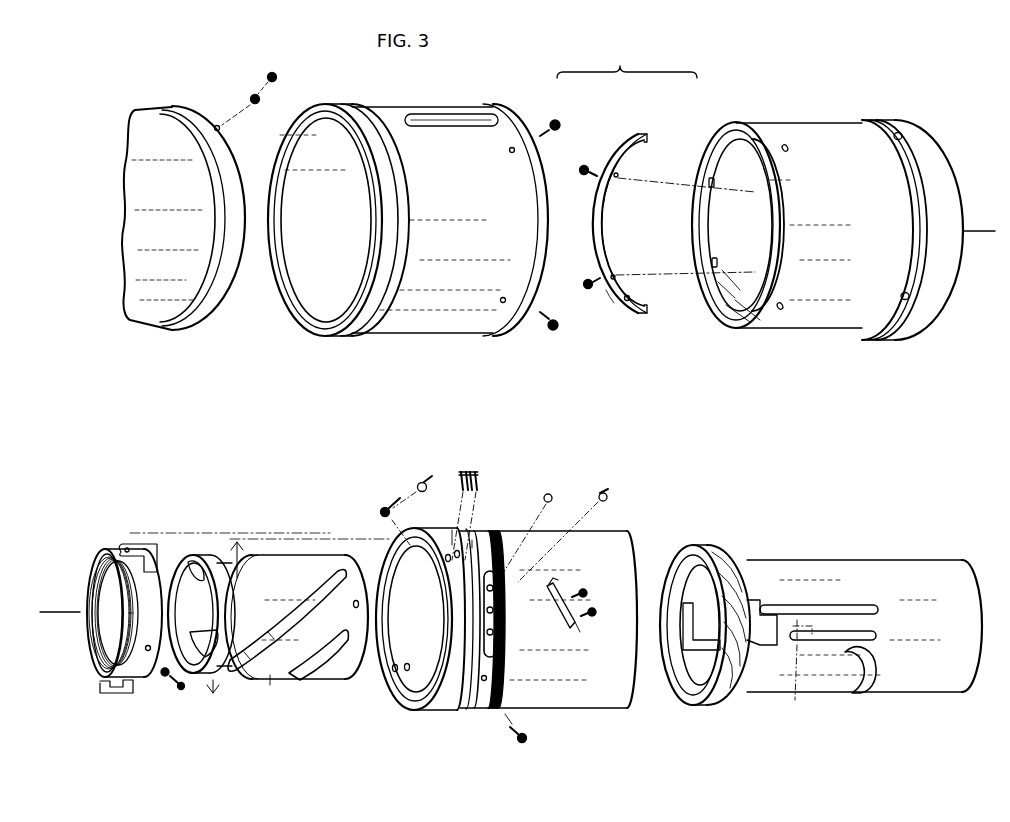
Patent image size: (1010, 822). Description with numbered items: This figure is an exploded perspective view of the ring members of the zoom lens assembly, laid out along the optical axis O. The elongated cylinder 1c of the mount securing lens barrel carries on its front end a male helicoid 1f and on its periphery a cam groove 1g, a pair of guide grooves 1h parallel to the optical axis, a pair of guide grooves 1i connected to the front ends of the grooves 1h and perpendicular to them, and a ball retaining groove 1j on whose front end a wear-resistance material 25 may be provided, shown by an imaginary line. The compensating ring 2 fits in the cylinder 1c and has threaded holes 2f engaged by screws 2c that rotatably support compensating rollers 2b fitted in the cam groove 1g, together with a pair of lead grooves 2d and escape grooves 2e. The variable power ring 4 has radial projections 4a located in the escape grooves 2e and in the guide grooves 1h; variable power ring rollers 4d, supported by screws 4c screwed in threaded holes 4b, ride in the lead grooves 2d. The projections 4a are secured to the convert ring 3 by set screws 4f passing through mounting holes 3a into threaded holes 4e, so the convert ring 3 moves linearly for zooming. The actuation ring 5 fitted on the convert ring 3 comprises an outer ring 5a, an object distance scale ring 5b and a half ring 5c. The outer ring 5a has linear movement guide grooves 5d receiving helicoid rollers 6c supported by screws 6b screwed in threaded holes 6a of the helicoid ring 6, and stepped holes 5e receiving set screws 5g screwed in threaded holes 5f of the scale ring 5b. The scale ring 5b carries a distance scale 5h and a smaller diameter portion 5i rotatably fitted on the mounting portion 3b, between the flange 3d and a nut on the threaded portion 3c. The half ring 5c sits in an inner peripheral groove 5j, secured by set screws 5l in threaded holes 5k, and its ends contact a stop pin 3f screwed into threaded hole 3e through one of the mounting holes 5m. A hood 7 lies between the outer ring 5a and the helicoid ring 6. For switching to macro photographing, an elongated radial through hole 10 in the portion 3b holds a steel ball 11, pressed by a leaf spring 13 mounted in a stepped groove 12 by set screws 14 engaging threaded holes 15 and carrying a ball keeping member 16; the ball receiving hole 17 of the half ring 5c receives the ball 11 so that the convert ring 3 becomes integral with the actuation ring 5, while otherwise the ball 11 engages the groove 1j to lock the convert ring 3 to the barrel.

The helicoid ring 6 is at (138, 320).
The threaded holes 6a is at (226, 128).
The screws 6b is at (278, 77).
The helicoid rollers 6c is at (262, 103).
The actuation ring 5 is at (614, 66).
The outer ring 5a is at (475, 104).
The object distance scale ring 5b is at (745, 122).
The half ring 5c is at (635, 132).
The linear movement guide grooves 5d is at (440, 117).
The stepped holes 5e is at (508, 151).
The threaded holes 5f is at (903, 133).
The set screws 5g is at (561, 122).
The distance scale 5h is at (946, 168).
The smaller diameter portion 5i is at (720, 292).
The inner peripheral groove 5j is at (738, 325).
The threaded holes 5k is at (700, 186).
The set screws 5l is at (579, 170).
The mounting holes 5m is at (788, 151).
The ball receiving hole 17 is at (610, 298).
The optical axis O is at (516, 422).
The variable power ring 4 is at (88, 563).
The radial projections 4a is at (150, 546).
The threaded holes 4b is at (147, 654).
The screws 4c is at (183, 690).
The variable power ring rollers 4d is at (165, 678).
The threaded holes 4e is at (126, 546).
The set screws 4f is at (466, 470).
The compensating ring 2 is at (257, 537).
The compensating rollers 2b is at (380, 508).
The screws 2c is at (421, 482).
The lead grooves 2d is at (195, 562).
The escape grooves 2e is at (280, 560).
The threaded holes 2f is at (354, 598).
The hood 7 is at (270, 685).
The convert ring 3 is at (608, 548).
The mounting holes 3a is at (447, 555).
The mounting portion 3b is at (455, 542).
The threaded portion 3c is at (480, 535).
The flange 3d is at (460, 712).
The threaded hole 3e is at (489, 678).
The stop pin 3f is at (530, 740).
The radial through hole 10 is at (499, 578).
The steel ball 11 is at (551, 494).
The stepped groove 12 is at (497, 630).
The leaf spring 13 is at (577, 625).
The set screws 14 is at (597, 607).
The threaded holes 15 is at (497, 613).
The ball keeping member 16 is at (604, 490).
The elongated cylinder 1c is at (815, 563).
The male helicoid 1f is at (722, 552).
The cam groove 1g is at (874, 690).
The guide grooves 1h is at (845, 604).
The guide grooves 1i is at (766, 603).
The ball retaining groove 1j is at (878, 636).
The wear-resistance material 25 is at (795, 696).